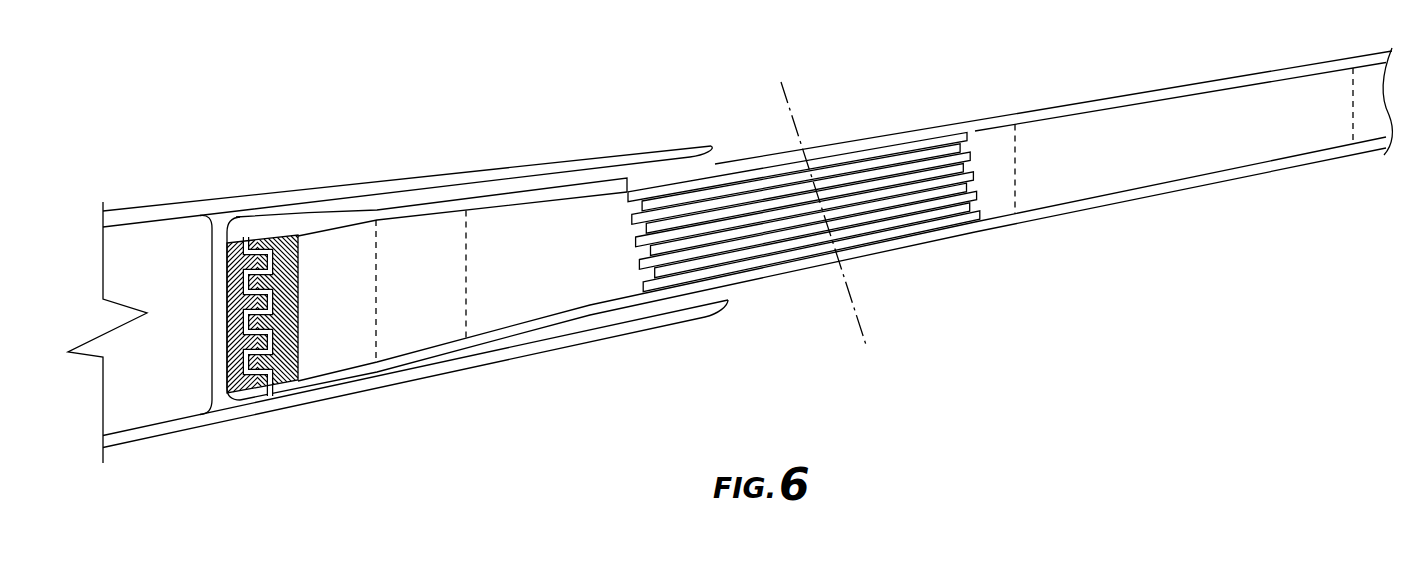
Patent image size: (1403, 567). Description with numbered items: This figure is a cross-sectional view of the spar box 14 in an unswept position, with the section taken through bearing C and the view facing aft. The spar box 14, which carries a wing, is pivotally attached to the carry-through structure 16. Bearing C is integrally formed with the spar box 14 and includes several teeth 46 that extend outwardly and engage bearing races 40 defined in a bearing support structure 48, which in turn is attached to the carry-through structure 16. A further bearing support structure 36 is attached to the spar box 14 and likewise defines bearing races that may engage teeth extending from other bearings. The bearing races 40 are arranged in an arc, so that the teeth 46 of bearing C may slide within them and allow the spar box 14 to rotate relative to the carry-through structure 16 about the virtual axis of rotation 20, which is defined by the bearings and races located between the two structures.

The spar box 14 is at (1037, 95).
The carry-through structure 16 is at (556, 152).
The virtual axis of rotation 20 is at (803, 137).
The bearing support structure 36 is at (829, 199).
The bearing race 40 is at (269, 356).
The teeth 46 is at (264, 401).
The bearing support structure 48 is at (239, 232).
The bearing C is at (288, 230).